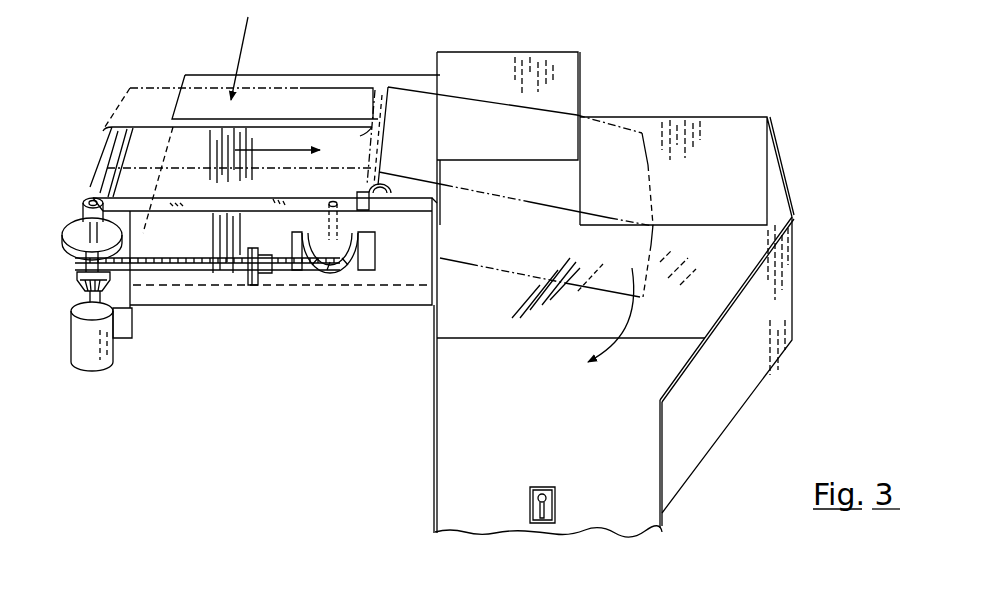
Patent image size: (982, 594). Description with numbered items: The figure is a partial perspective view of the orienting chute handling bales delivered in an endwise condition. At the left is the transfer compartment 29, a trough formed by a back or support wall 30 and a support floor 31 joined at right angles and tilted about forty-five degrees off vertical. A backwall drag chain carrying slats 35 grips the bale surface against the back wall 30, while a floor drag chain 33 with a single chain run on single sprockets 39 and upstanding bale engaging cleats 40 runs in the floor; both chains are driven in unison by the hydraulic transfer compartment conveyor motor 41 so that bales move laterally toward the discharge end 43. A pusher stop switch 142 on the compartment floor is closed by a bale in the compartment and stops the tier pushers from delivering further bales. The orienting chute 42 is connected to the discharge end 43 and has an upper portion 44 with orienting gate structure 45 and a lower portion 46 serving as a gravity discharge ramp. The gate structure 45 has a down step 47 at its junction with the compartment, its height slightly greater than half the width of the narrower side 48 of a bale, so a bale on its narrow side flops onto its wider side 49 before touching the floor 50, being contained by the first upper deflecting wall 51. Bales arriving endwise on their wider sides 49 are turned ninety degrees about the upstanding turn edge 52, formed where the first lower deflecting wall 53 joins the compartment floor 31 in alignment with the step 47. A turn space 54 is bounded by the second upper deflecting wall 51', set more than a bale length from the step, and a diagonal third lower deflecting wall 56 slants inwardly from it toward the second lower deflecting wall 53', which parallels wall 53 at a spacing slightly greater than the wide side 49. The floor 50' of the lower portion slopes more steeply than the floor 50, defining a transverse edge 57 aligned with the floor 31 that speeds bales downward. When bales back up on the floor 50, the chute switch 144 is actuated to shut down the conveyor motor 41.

The transfer compartment 29 is at (283, 78).
The back wall 30 is at (187, 107).
The support floor 31 is at (253, 198).
The floor drag chain 33 is at (305, 272).
The slats 35 is at (107, 133).
The sprockets 39 is at (75, 251).
The bale engaging cleats 40 is at (257, 280).
The transfer compartment conveyor motor 41 is at (113, 350).
The orienting chute 42 is at (666, 81).
The discharge end 43 is at (427, 117).
The upper portion 44 is at (717, 254).
The orienting gate structure 45 is at (744, 172).
The lower portion 46 is at (550, 438).
The down step 47 is at (445, 170).
The narrower side 48 is at (597, 315).
The wider side 49 is at (628, 173).
The floor 50 is at (571, 298).
The floor 50' is at (616, 408).
The first upper deflecting wall 51 is at (555, 171).
The second upper deflecting wall 51' is at (811, 190).
The turn edge 52 is at (437, 222).
The first lower deflecting wall 53 is at (463, 410).
The second lower deflecting wall 53' is at (690, 520).
The turn space 54 is at (685, 324).
The third lower deflecting wall 56 is at (742, 276).
The transverse edge 57 is at (508, 340).
The pusher stop switch 142 is at (367, 212).
The chute switch 144 is at (552, 505).